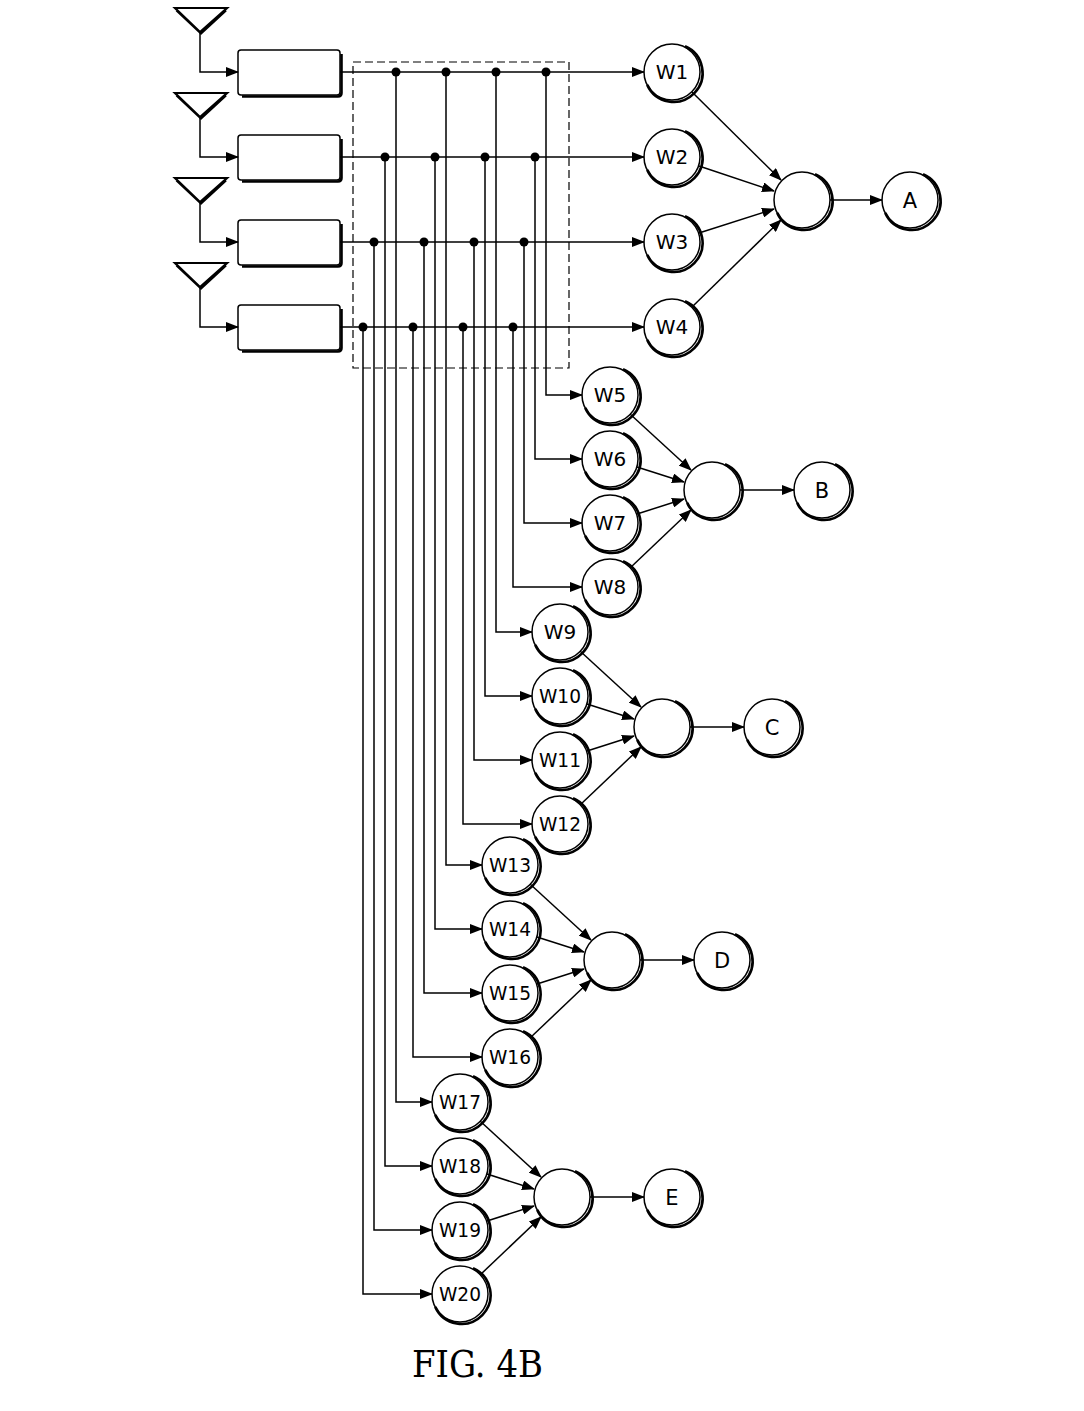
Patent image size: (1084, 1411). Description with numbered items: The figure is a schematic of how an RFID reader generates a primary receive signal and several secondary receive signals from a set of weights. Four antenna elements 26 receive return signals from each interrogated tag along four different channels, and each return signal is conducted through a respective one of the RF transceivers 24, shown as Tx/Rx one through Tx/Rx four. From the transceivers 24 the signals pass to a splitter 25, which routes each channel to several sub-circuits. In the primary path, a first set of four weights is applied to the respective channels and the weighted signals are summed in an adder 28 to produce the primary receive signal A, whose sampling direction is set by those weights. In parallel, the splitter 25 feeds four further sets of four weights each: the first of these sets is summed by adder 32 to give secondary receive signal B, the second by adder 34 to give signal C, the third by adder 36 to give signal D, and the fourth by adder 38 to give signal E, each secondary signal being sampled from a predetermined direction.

The RF transceivers 24 is at (350, 377).
The splitter 25 is at (478, 52).
The antenna elements 26 is at (193, 328).
The adder 28 is at (802, 171).
The adder 32 is at (712, 461).
The adder 34 is at (662, 698).
The adder 36 is at (612, 931).
The adder 38 is at (562, 1168).